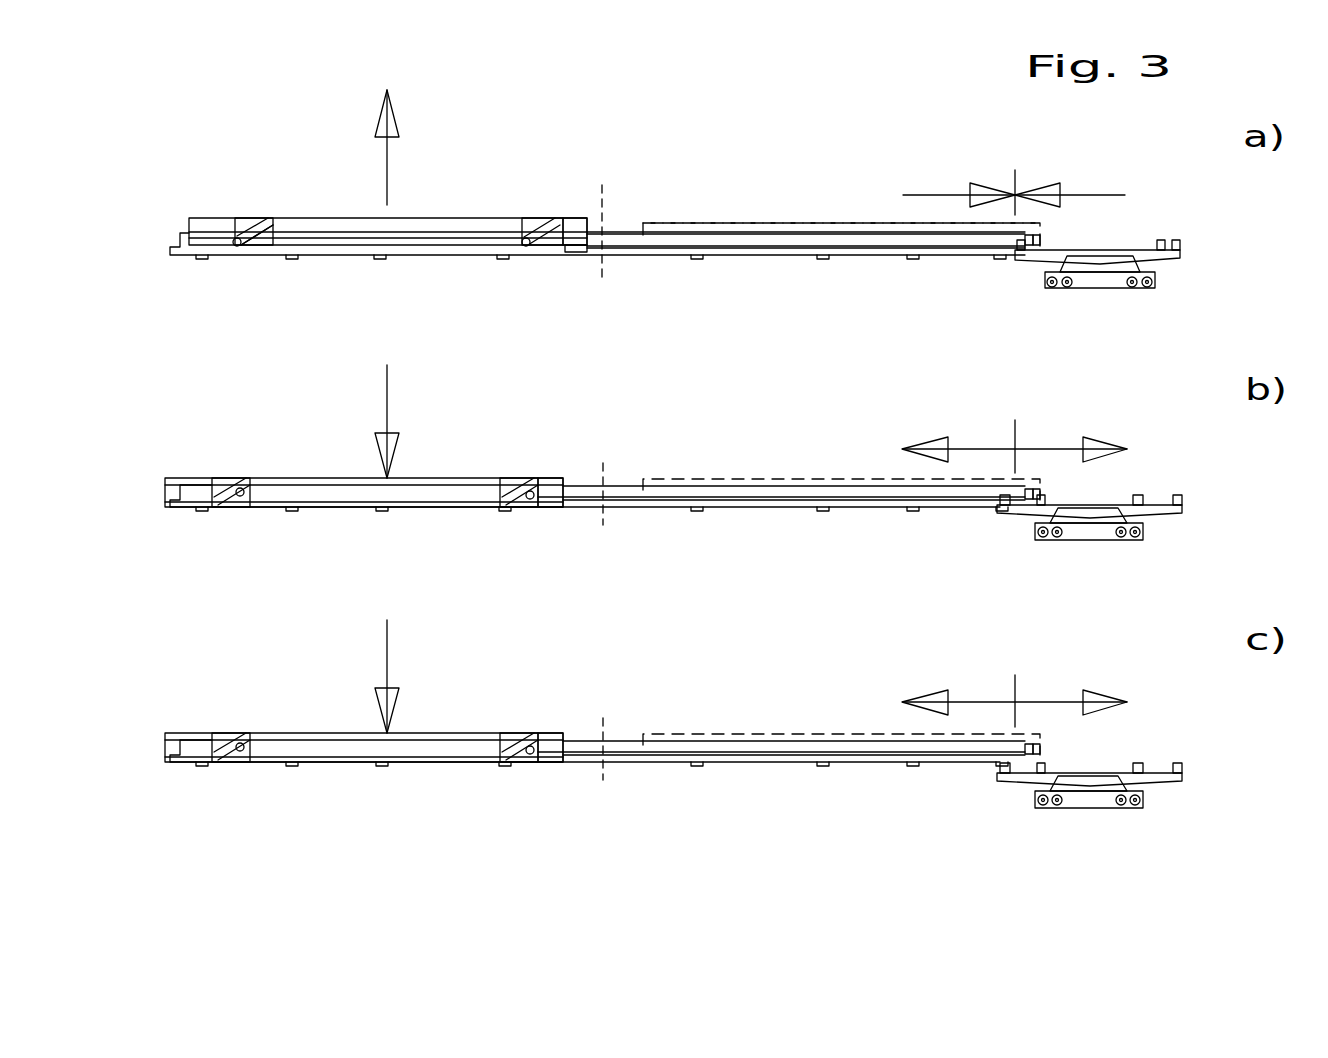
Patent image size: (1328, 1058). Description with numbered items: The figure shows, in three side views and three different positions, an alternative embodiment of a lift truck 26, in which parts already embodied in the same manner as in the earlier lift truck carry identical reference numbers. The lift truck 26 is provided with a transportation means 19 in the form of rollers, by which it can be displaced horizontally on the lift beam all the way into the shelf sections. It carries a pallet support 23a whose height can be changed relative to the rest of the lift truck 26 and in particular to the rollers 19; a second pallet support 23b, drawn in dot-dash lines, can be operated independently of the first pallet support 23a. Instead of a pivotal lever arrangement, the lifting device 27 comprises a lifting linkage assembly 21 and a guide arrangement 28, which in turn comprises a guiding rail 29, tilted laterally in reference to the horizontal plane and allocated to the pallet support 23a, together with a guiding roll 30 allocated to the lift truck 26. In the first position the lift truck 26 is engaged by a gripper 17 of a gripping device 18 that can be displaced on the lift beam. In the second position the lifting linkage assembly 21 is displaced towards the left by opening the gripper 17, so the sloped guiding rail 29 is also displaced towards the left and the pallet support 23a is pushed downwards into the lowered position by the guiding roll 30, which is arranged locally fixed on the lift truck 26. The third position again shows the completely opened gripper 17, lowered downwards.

In FIG. 3a, the gripper 17 is at (1022, 258).
In FIG. 3b, the gripper 17 is at (1155, 507).
In FIG. 3c, the gripper 17 is at (1108, 745).
In FIG. 3a, the gripping device 18 is at (1104, 263).
In FIG. 3b, the gripping device 18 is at (1082, 520).
In FIG. 3c, the gripping device 18 is at (1118, 734).
In FIG. 3a, the transportation means 19 is at (198, 256).
In FIG. 3b, the transportation means 19 is at (383, 510).
In FIG. 3c, the transportation means 19 is at (589, 790).
In FIG. 3a, the lifting linkage assembly 21 is at (771, 246).
In FIG. 3b, the lifting linkage assembly 21 is at (615, 497).
In FIG. 3c, the lifting linkage assembly 21 is at (801, 696).
In FIG. 3a, the pallet support 23a is at (427, 225).
In FIG. 3b, the pallet support 23a is at (438, 484).
In FIG. 3c, the pallet support 23a is at (364, 747).
In FIG. 3a, the second pallet support 23b is at (668, 226).
In FIG. 3a, the lift truck 26 is at (837, 209).
In FIG. 3b, the lift truck 26 is at (745, 462).
In FIG. 3c, the lift truck 26 is at (841, 696).
In FIG. 3a, the lifting device 27 is at (577, 222).
In FIG. 3a, the guide arrangement 28 is at (248, 247).
In FIG. 3a, the guiding rail 29 is at (262, 234).
In FIG. 3b, the guiding rail 29 is at (223, 497).
In FIG. 3c, the guiding rail 29 is at (211, 699).
In FIG. 3a, the guiding roll 30 is at (240, 246).
In FIG. 3b, the guiding roll 30 is at (243, 497).
In FIG. 3c, the guiding roll 30 is at (270, 791).